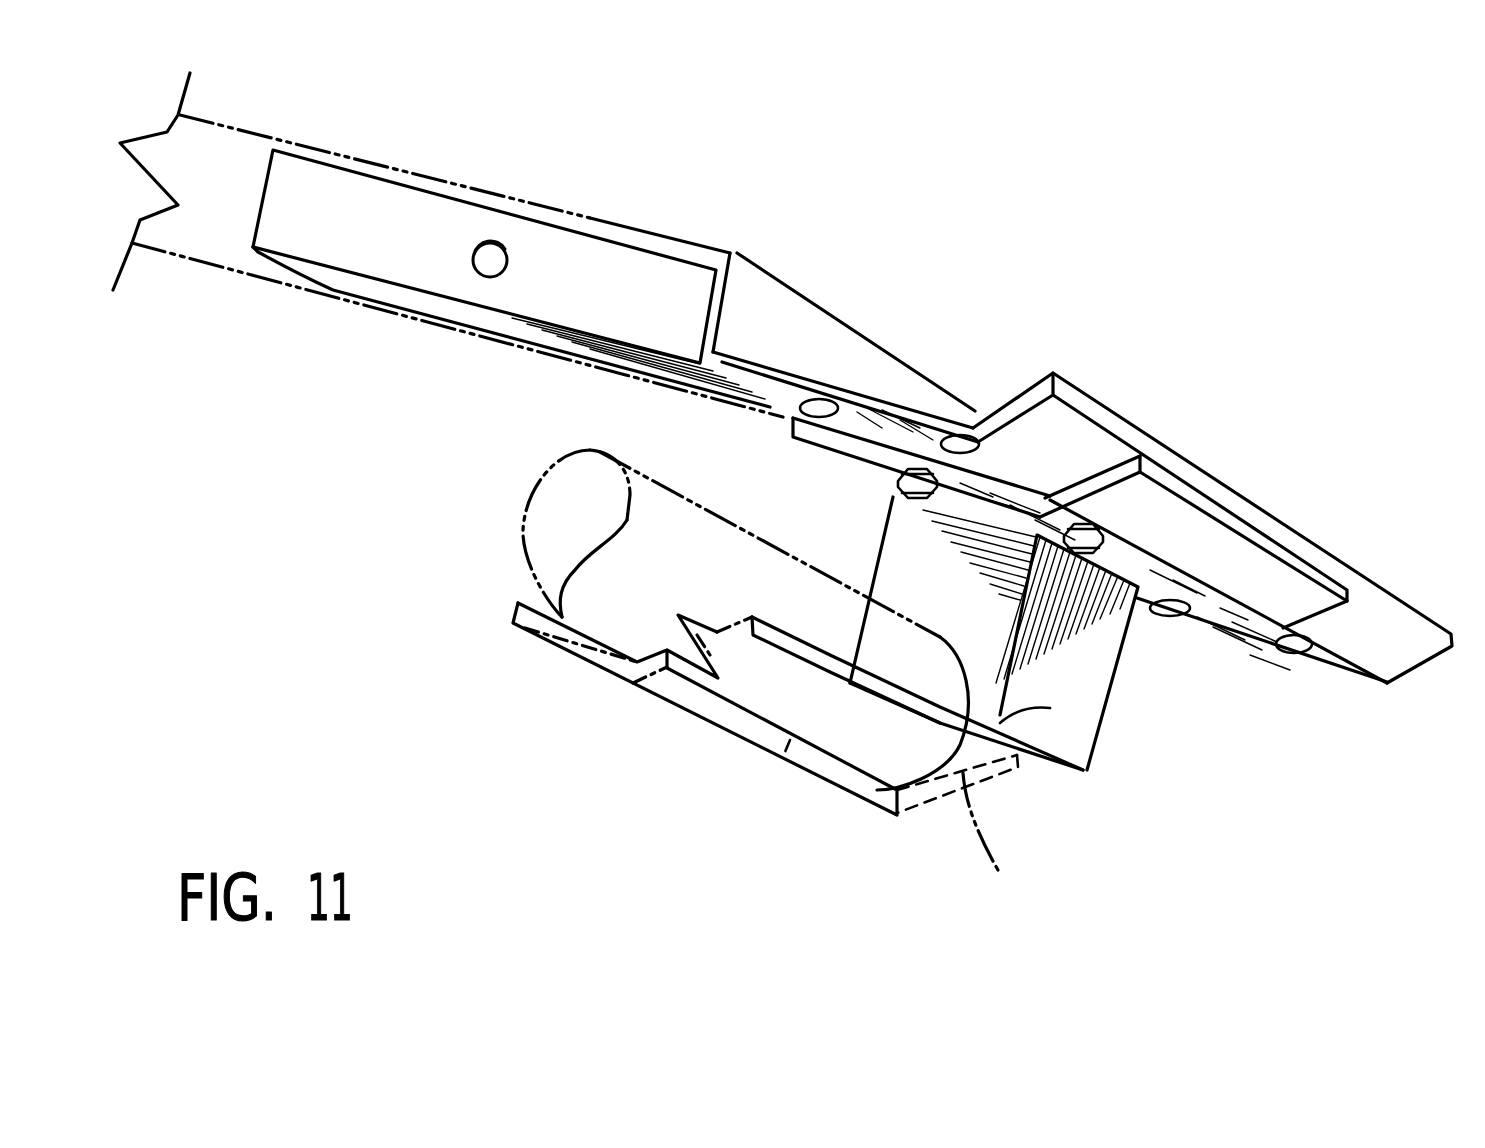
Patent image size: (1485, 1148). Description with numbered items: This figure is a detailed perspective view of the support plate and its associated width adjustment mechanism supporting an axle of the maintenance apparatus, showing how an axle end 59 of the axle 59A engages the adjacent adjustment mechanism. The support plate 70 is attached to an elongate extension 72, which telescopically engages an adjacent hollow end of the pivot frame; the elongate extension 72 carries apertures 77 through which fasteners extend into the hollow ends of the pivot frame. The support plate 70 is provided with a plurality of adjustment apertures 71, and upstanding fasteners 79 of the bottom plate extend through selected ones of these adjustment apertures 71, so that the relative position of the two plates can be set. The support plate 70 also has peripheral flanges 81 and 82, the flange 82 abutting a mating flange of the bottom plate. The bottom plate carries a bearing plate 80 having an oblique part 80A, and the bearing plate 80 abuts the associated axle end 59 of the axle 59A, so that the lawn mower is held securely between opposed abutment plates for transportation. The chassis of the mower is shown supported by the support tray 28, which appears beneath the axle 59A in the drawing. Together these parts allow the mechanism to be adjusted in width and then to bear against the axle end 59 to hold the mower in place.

The support tray 28 is at (763, 687).
The axle end 59 is at (937, 752).
The axle 59A is at (653, 558).
The support plate 70 is at (887, 388).
The adjustment apertures 71 is at (1295, 654).
The elongate extension 72 is at (320, 190).
The apertures 77 is at (490, 258).
The upstanding fasteners 79 is at (914, 494).
The bearing plate 80 is at (1092, 702).
The oblique part 80A is at (990, 657).
The peripheral flange 81 is at (788, 313).
The peripheral flange 82 is at (1127, 412).